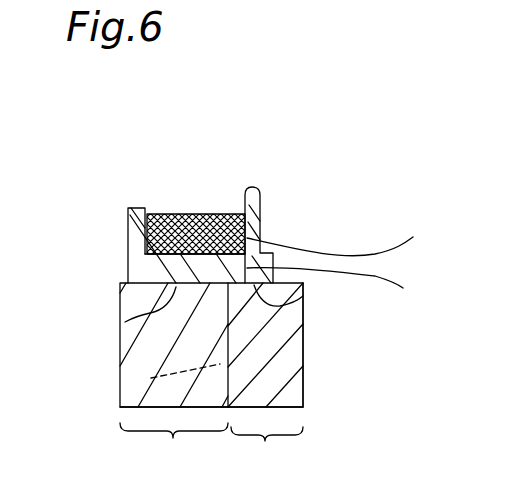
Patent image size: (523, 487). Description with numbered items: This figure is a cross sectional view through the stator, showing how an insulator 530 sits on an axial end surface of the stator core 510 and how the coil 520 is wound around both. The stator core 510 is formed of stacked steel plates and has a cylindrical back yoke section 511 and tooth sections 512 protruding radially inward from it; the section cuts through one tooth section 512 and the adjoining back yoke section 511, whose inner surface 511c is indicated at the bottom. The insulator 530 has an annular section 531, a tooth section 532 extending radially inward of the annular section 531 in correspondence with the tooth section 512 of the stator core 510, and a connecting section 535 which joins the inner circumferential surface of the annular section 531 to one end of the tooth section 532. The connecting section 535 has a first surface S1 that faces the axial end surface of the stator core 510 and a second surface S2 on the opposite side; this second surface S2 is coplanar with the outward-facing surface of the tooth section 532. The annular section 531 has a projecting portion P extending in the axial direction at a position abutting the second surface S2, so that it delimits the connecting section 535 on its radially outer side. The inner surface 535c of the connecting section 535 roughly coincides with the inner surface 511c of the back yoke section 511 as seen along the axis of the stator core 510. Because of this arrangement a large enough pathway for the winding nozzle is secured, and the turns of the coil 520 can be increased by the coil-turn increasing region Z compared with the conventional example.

The stator core 510 is at (306, 376).
The back yoke section 511 is at (265, 440).
The tooth section 512 is at (174, 378).
The inner surface of the back yoke section 511c is at (119, 387).
The coil 520 is at (198, 213).
The insulator 530 is at (261, 219).
The annular section 531 is at (278, 291).
The tooth section 532 is at (121, 322).
The connecting section 535 is at (304, 336).
The inner surface of the connecting section 535c is at (224, 258).
The coil-turn increasing region Z is at (243, 198).
The projecting portion P is at (257, 190).
The first surface S1 is at (346, 291).
The second surface S2 is at (349, 238).